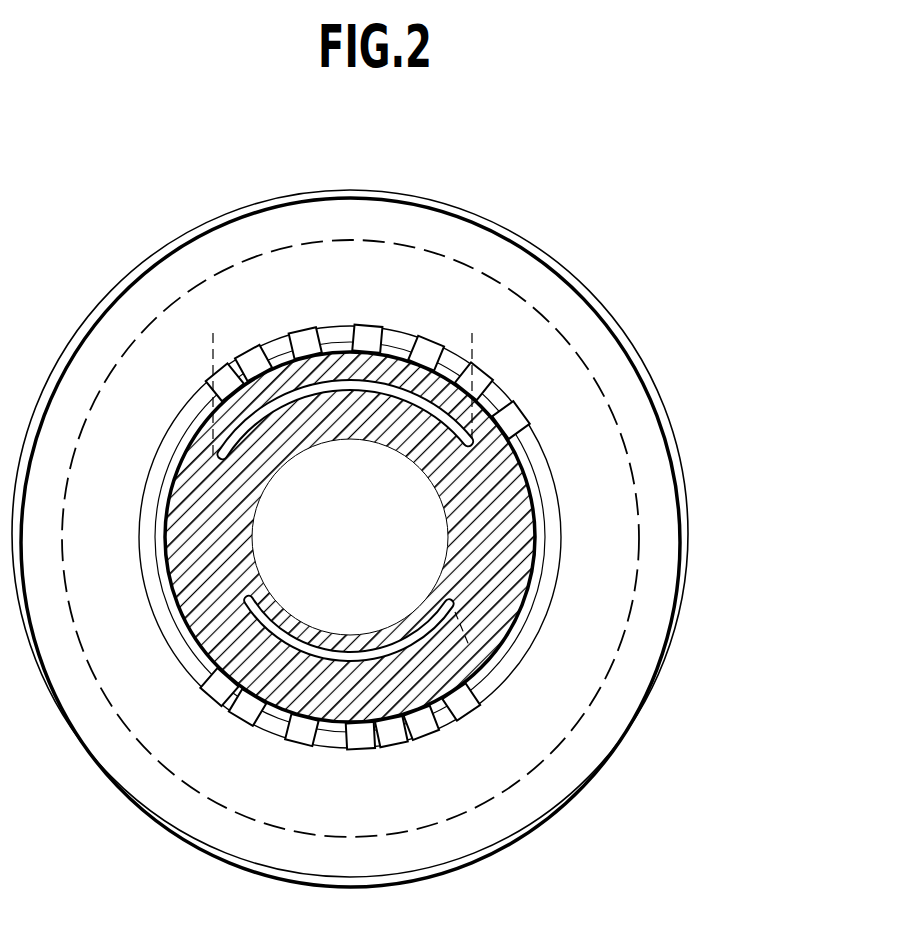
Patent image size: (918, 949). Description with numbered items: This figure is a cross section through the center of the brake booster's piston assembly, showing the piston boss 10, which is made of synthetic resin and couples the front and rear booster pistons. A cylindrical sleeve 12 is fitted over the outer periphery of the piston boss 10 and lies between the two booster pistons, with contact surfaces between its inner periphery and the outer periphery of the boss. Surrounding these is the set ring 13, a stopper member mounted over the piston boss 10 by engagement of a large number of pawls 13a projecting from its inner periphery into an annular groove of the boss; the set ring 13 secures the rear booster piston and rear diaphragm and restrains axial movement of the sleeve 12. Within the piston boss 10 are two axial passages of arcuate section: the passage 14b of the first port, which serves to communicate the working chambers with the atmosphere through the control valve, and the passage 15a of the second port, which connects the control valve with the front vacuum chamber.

The piston boss 10 is at (540, 486).
The sleeve 12 is at (605, 382).
The set ring 13 is at (557, 255).
The pawls 13a is at (272, 352).
The passage 14b is at (361, 397).
The passage 15a is at (349, 659).